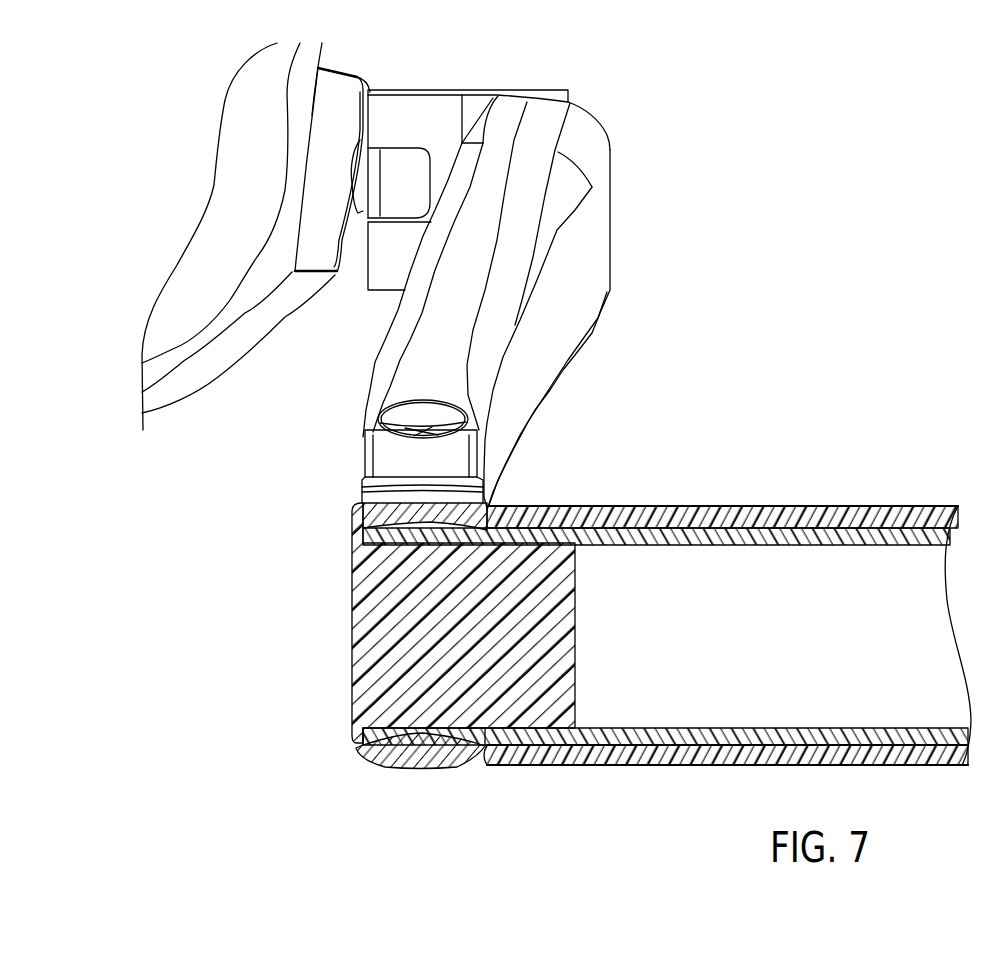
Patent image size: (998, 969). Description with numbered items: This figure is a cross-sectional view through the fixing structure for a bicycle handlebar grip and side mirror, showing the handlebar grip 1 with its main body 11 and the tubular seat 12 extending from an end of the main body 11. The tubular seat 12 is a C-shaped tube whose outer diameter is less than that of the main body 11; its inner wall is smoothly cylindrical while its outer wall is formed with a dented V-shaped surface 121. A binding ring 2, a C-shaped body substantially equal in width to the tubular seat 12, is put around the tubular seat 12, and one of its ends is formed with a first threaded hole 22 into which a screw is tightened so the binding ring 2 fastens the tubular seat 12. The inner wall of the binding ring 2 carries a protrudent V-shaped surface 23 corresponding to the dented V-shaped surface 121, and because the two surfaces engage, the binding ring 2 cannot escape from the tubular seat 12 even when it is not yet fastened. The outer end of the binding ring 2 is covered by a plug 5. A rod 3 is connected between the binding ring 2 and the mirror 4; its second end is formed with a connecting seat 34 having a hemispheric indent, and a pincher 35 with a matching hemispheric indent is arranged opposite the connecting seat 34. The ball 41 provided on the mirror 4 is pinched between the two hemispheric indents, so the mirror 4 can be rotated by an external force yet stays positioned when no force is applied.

The handlebar grip 1 is at (836, 498).
The main body 11 is at (698, 517).
The tubular seat 12 is at (350, 743).
The dented V-shaped surface 121 is at (467, 735).
The binding ring 2 is at (417, 798).
The first threaded hole 22 is at (423, 757).
The protrudent V-shaped surface 23 is at (407, 732).
The rod 3 is at (600, 334).
The connecting seat 34 is at (430, 117).
The pincher 35 is at (388, 270).
The mirror 4 is at (208, 338).
The ball 41 is at (405, 178).
The plug 5 is at (413, 597).